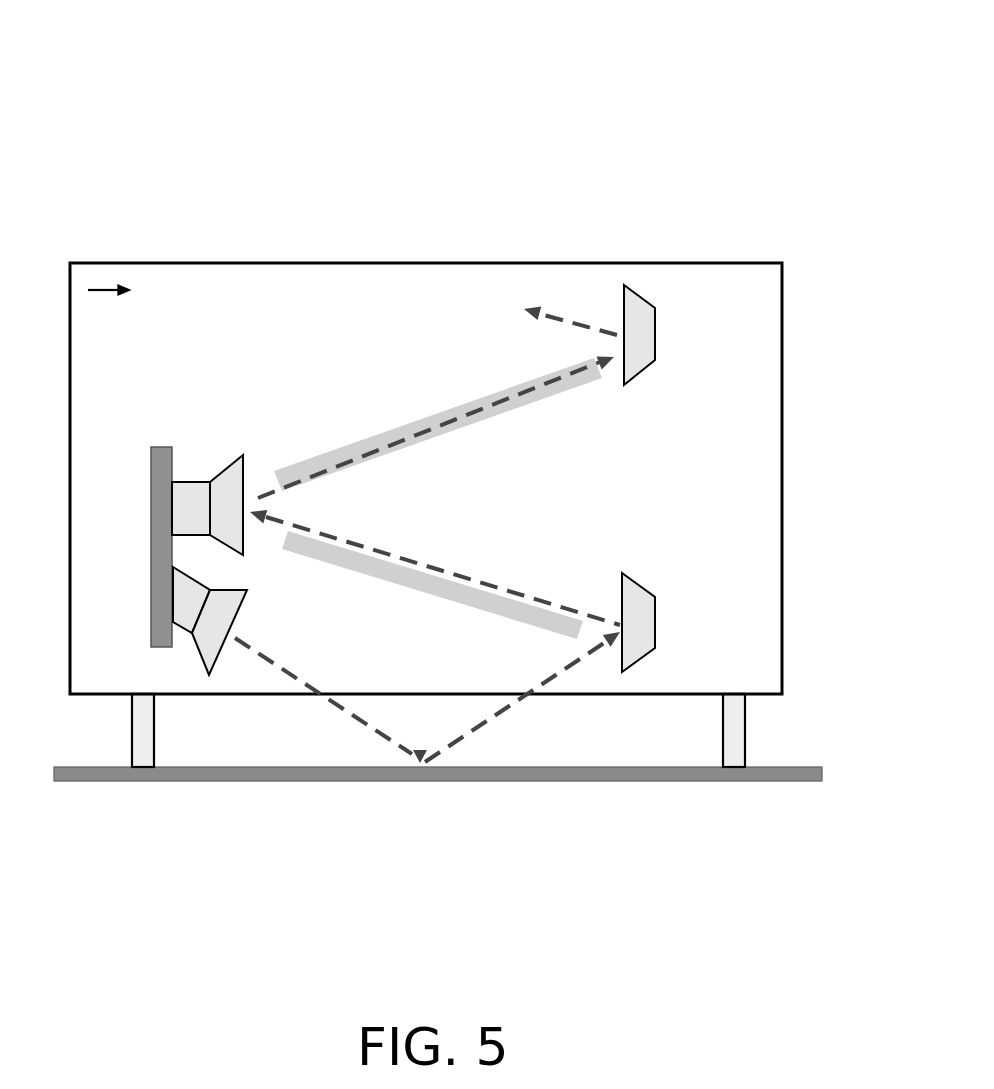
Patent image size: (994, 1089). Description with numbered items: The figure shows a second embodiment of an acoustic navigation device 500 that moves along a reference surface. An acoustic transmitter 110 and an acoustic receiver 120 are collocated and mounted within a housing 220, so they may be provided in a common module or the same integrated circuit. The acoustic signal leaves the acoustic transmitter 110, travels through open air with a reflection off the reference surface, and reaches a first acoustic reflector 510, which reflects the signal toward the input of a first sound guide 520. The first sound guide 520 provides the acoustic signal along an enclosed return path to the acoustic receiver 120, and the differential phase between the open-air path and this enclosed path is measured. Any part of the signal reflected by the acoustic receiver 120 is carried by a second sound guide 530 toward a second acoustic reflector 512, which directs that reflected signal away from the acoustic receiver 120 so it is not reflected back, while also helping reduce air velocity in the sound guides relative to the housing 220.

The acoustic navigation device 500 is at (775, 37).
The housing 220 is at (200, 254).
The acoustic receiver 120 is at (138, 511).
The acoustic transmitter 110 is at (138, 606).
The first acoustic reflector 510 is at (636, 562).
The second acoustic reflector 512 is at (636, 396).
The first sound guide 520 is at (524, 566).
The second sound guide 530 is at (524, 425).